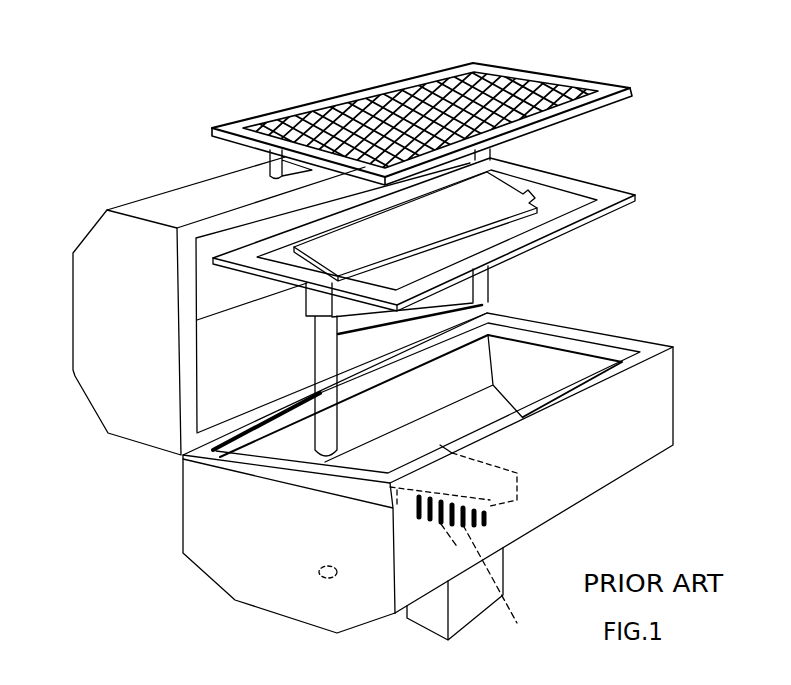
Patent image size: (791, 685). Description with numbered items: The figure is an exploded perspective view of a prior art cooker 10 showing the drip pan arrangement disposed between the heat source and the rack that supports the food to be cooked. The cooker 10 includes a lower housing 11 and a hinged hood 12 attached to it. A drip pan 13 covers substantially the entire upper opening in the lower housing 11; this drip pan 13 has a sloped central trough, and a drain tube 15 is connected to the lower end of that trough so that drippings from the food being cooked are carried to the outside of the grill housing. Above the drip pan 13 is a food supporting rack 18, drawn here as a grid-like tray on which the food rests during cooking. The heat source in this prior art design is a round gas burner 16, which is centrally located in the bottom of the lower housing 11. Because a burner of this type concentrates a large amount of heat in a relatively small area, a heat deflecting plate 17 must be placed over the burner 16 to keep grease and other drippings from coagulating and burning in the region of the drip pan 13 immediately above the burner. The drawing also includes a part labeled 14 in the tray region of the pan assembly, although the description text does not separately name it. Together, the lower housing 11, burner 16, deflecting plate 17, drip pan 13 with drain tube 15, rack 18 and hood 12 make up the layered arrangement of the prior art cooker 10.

The prior art cooker 10 is at (137, 544).
The lower housing 11 is at (577, 497).
The hinged hood 12 is at (117, 398).
The drip pan 13 is at (598, 200).
The plate 14 is at (540, 200).
The drain tube 15 is at (317, 447).
The round gas burner 16 is at (466, 543).
The heat deflecting plate 17 is at (492, 385).
The food supporting rack 18 is at (508, 72).